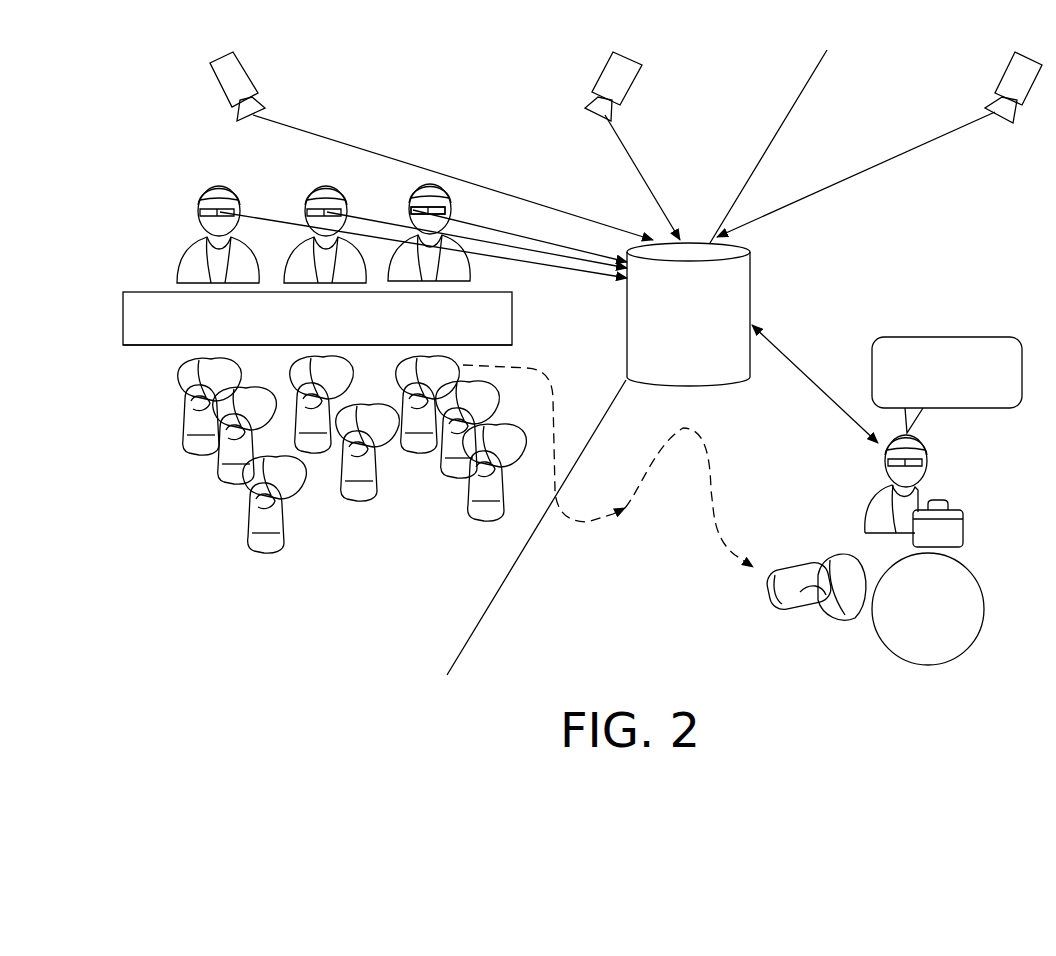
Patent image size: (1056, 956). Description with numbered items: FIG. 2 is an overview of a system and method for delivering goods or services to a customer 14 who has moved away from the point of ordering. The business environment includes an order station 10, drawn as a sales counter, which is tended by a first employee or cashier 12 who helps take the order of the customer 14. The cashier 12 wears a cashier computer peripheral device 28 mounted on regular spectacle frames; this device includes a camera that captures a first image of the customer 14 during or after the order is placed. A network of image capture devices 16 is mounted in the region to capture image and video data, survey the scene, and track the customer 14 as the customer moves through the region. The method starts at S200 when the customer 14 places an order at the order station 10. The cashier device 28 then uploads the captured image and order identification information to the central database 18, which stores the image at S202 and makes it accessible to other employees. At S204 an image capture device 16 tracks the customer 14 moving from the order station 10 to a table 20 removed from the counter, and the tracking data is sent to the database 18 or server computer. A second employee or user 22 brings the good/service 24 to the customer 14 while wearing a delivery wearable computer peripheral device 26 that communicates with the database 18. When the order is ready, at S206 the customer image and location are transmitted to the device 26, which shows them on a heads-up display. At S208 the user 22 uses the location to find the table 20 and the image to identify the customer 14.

The order station 10 is at (150, 335).
The first employee/cashier 12 is at (412, 192).
The customer 14 is at (463, 375).
The image capture device 16 is at (245, 72).
The central database 18 is at (752, 270).
The table 20 is at (958, 640).
The second employee/user 22 is at (880, 510).
The good/service 24 is at (953, 527).
The wearable computer peripheral device 26 is at (922, 462).
The cashier computer peripheral device 28 is at (428, 200).
The method start step S200 is at (513, 315).
The image storing step S202 is at (573, 250).
The customer tracking step S204 is at (628, 516).
The transmitting step S206 is at (801, 360).
The customer identifying step S208 is at (946, 337).